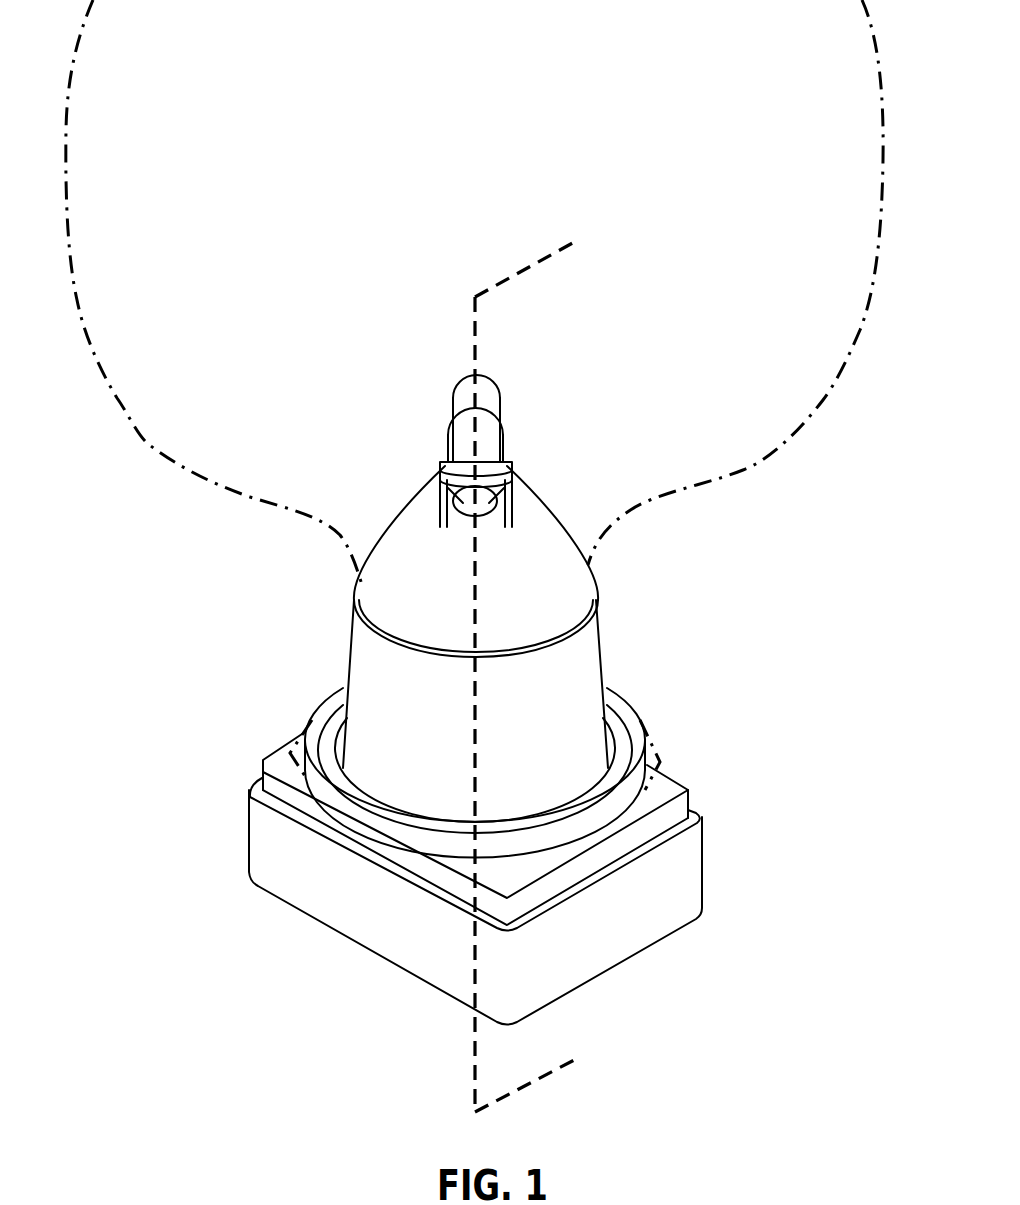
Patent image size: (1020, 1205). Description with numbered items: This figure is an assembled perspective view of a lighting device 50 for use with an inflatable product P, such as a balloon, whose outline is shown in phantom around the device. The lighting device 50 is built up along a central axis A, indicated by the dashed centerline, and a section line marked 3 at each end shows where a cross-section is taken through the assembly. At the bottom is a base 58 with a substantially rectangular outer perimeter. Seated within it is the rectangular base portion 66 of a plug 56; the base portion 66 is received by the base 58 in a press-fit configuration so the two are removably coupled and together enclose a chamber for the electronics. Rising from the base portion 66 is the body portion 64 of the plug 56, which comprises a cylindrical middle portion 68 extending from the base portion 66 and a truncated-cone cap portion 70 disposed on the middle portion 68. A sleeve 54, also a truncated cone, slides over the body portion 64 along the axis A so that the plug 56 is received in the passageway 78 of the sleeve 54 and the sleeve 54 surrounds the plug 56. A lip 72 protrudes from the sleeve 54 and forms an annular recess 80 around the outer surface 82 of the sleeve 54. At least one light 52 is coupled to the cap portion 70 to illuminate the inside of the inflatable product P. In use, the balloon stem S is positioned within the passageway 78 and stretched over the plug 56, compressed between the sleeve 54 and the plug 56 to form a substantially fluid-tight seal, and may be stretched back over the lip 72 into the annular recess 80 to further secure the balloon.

The section line 3- 3 is at (549, 665).
The lighting device 50 is at (511, 442).
The light 52 is at (520, 418).
The sleeve 54 is at (505, 730).
The plug 56 is at (373, 508).
The base 58 is at (719, 873).
The body portion 64 is at (523, 580).
The base portion 66 is at (657, 797).
The middle portion 68 is at (410, 620).
The cap portion 70 is at (420, 512).
The lip 72 is at (628, 698).
The passageway 78 is at (565, 610).
The annular recess 80 is at (337, 705).
The outer surface 82 is at (578, 668).
The inflatable product P is at (147, 445).
The balloon stem S is at (285, 752).
The axis A is at (473, 1046).